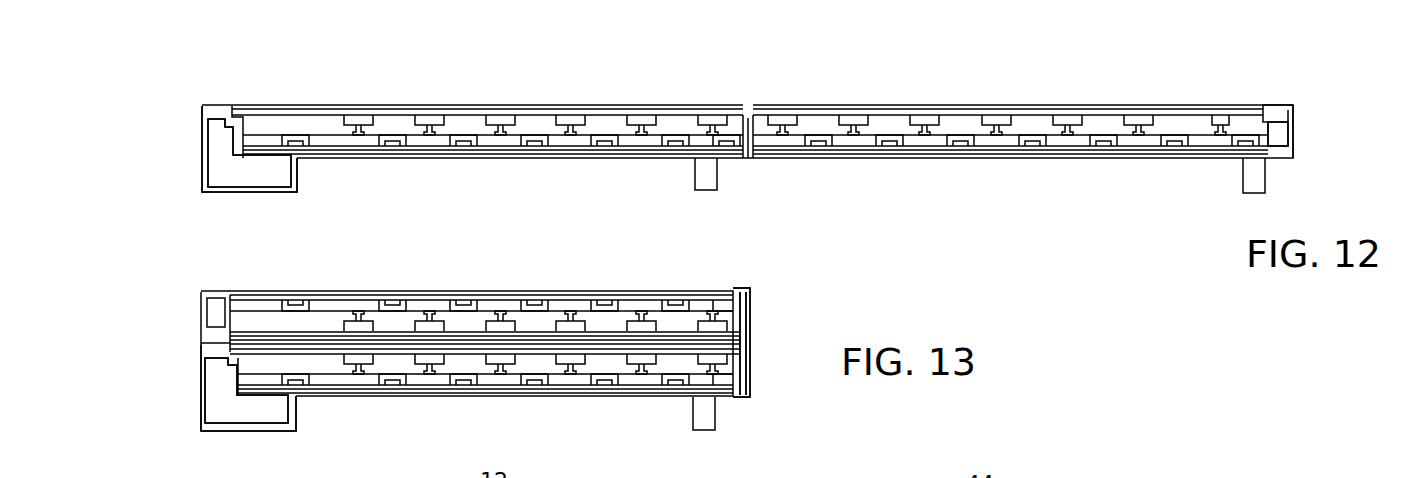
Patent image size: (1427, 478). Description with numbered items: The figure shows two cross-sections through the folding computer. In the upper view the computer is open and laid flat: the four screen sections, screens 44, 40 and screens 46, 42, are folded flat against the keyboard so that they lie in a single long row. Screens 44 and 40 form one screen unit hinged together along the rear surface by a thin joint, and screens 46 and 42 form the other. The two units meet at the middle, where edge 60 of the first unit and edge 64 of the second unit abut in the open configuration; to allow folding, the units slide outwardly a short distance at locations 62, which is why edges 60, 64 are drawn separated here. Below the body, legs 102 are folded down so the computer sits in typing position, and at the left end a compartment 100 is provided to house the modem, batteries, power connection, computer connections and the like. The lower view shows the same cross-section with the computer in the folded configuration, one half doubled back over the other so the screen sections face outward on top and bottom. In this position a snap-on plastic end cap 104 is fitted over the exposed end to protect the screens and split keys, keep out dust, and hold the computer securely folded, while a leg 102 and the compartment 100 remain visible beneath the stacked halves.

In FIG. 12, the screen 40 is at (319, 116).
In FIG. 13, the screen 40 is at (322, 350).
In FIG. 12, the screen 42 is at (1100, 146).
In FIG. 13, the screen 42 is at (606, 336).
In FIG. 12, the screen 44 is at (330, 104).
In FIG. 13, the screen 44 is at (397, 345).
In FIG. 12, the screen 46 is at (1008, 105).
In FIG. 13, the screen 46 is at (664, 343).
In FIG. 12, the edge 60 is at (756, 113).
In FIG. 12, the location 62 is at (238, 105).
In FIG. 12, the edge 64 is at (746, 114).
In FIG. 13, the compartment 100 is at (217, 406).
In FIG. 12, the leg 102 is at (696, 174).
In FIG. 13, the leg 102 is at (697, 416).
In FIG. 13, the snap-on plastic end cap 104 is at (741, 398).